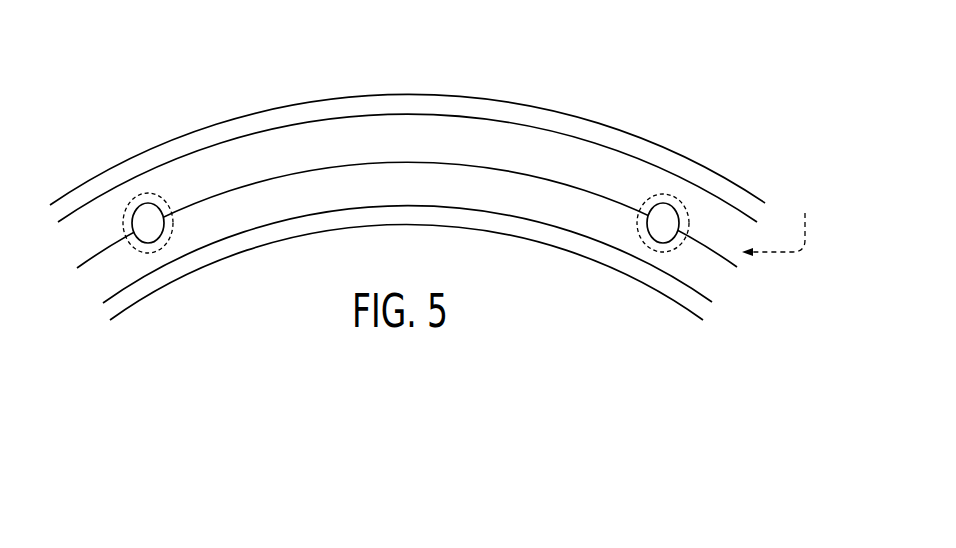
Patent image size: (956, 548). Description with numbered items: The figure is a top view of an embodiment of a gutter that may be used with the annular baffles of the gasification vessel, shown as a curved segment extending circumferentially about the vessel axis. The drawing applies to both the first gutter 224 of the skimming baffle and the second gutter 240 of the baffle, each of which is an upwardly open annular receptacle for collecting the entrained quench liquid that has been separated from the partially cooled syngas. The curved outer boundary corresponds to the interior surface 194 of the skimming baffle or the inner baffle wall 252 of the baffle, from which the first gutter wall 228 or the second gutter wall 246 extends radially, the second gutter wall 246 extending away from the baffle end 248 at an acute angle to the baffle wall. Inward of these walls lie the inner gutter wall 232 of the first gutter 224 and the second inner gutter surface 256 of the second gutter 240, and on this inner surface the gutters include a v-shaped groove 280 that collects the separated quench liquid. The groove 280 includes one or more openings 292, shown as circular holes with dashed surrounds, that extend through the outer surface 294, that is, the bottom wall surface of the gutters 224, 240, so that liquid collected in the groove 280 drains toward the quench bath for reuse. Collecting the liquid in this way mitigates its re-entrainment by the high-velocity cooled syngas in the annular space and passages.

The first gutter 224 is at (436, 182).
The second gutter 240 is at (436, 182).
The interior surface 194 is at (531, 148).
The inner baffle wall 252 is at (588, 120).
The groove 280 is at (251, 181).
The inner gutter wall 232 is at (407, 254).
The second inner gutter surface 256 is at (303, 203).
The first gutter wall 228 is at (406, 272).
The second gutter wall 246 is at (500, 237).
The openings 292 is at (670, 248).
The outer surface 294 is at (782, 221).
The baffle end 248 is at (740, 268).